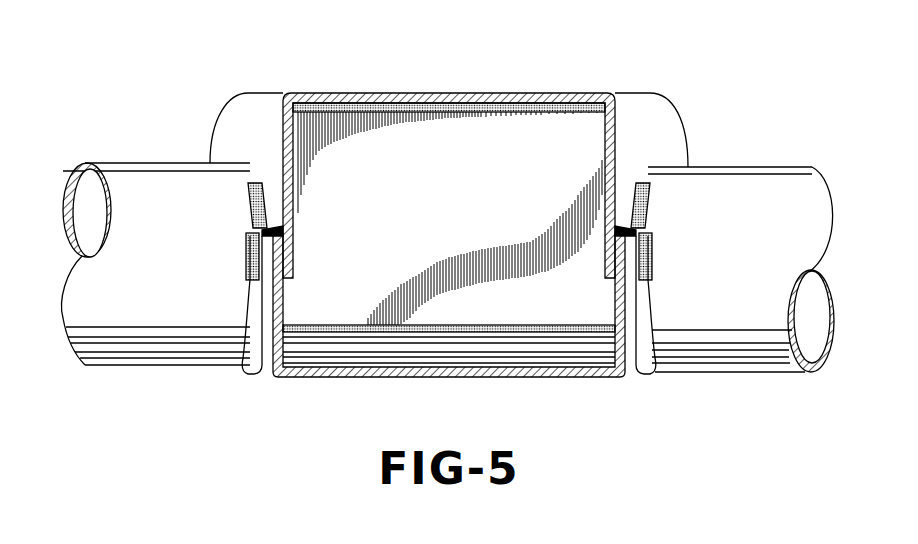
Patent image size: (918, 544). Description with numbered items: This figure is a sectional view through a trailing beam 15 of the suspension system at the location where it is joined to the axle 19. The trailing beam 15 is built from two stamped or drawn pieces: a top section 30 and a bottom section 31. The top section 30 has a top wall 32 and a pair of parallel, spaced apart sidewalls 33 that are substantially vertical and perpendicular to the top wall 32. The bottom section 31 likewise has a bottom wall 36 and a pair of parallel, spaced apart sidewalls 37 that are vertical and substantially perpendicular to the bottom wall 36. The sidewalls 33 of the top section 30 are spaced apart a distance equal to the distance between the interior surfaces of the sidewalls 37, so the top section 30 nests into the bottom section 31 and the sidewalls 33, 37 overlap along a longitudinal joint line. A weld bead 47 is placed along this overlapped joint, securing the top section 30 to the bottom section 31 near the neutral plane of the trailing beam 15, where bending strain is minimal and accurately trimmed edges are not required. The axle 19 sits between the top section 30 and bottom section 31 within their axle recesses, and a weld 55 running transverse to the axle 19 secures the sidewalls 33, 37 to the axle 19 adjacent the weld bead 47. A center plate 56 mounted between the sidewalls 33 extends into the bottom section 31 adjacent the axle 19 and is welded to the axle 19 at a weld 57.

The trailing beam 15 is at (450, 226).
The axle 19 is at (145, 189).
The top section 30 is at (565, 93).
The bottom section 31 is at (449, 337).
The top wall 32 is at (463, 93).
The sidewall 33 is at (242, 132).
The bottom wall 36 is at (348, 376).
The sidewall 37 is at (258, 353).
The weld bead 47 is at (258, 230).
The weld 55 is at (253, 204).
The center plate 56 is at (345, 147).
The weld 57 is at (405, 333).